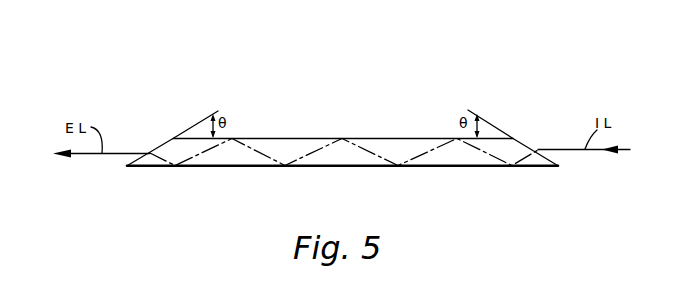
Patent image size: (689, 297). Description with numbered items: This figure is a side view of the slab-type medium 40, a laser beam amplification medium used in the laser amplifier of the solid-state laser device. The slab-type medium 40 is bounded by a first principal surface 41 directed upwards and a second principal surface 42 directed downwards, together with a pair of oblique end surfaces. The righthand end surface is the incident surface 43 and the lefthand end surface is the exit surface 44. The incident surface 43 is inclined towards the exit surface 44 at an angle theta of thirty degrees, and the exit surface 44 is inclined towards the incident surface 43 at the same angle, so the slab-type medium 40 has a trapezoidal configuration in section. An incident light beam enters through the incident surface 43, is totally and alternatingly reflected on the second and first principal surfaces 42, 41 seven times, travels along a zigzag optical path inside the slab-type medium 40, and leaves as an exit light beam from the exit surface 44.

The slab-type medium 40 is at (342, 167).
The first principal surface 41 is at (323, 138).
The second principal surface 42 is at (315, 167).
The incident surface 43 is at (532, 142).
The exit surface 44 is at (160, 143).